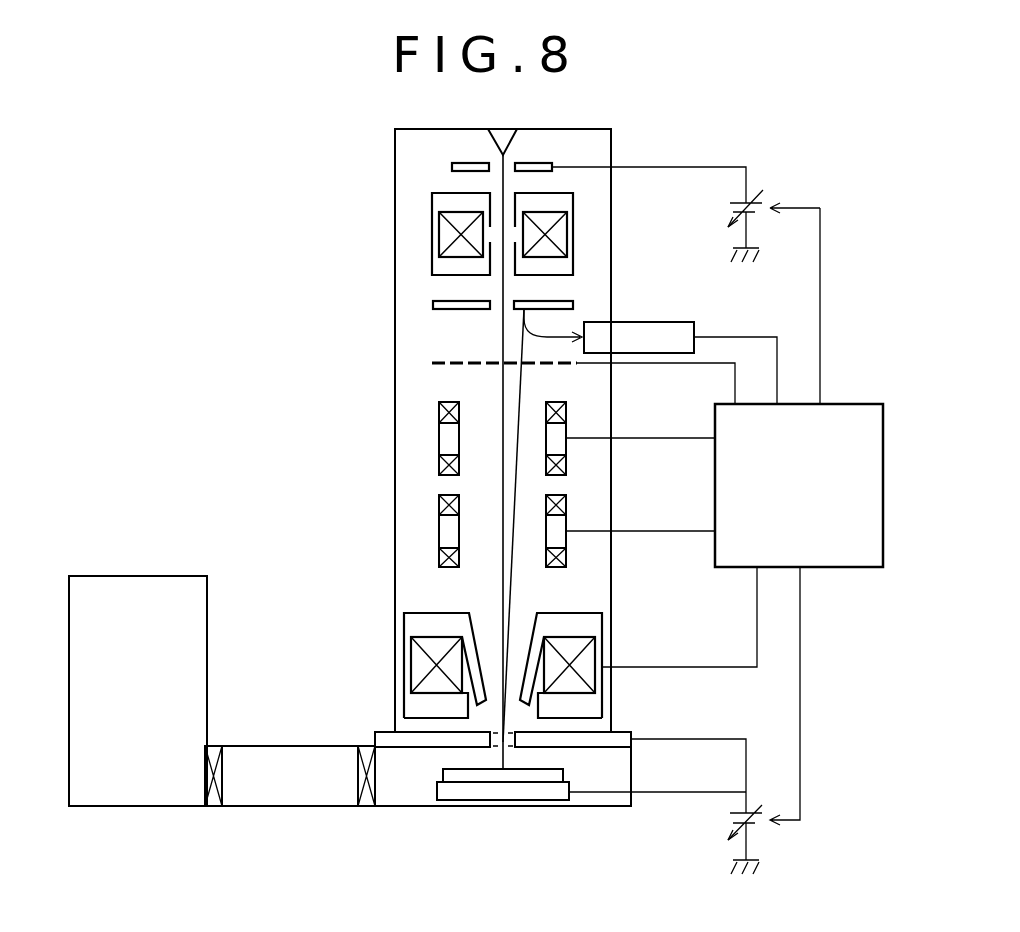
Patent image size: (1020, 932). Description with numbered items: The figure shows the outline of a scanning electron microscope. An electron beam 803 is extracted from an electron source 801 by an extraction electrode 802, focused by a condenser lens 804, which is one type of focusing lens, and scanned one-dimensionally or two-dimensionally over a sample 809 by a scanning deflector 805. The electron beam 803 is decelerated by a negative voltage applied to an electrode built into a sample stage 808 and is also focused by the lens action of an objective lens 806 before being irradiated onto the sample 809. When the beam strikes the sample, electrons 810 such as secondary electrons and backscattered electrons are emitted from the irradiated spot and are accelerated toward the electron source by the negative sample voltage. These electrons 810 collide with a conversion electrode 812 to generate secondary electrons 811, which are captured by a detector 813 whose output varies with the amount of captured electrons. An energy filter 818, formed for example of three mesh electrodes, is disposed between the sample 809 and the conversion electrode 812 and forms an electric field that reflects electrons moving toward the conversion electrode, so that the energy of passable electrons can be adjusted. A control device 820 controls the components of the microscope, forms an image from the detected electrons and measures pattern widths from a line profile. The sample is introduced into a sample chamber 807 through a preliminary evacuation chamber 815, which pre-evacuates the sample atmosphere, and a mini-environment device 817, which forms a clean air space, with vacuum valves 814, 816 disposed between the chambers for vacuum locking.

The electron source 801 is at (496, 141).
The extraction electrode 802 is at (452, 167).
The electron beam 803 is at (502, 182).
The condenser lens 804 is at (432, 236).
The scanning deflector 805 is at (439, 531).
The objective lens 806 is at (404, 628).
The sample chamber 807 is at (605, 806).
The sample stage 808 is at (533, 792).
The sample 809 is at (467, 777).
The electrons 810 is at (520, 344).
The secondary electrons 811 is at (560, 336).
The conversion electrode 812 is at (433, 305).
The detector 813 is at (695, 327).
The vacuum valve 814 is at (368, 808).
The preliminary evacuation chamber 815 is at (285, 746).
The vacuum valve 816 is at (215, 808).
The mini-environment device 817 is at (137, 576).
The energy filter 818 is at (432, 363).
The control device 820 is at (852, 568).